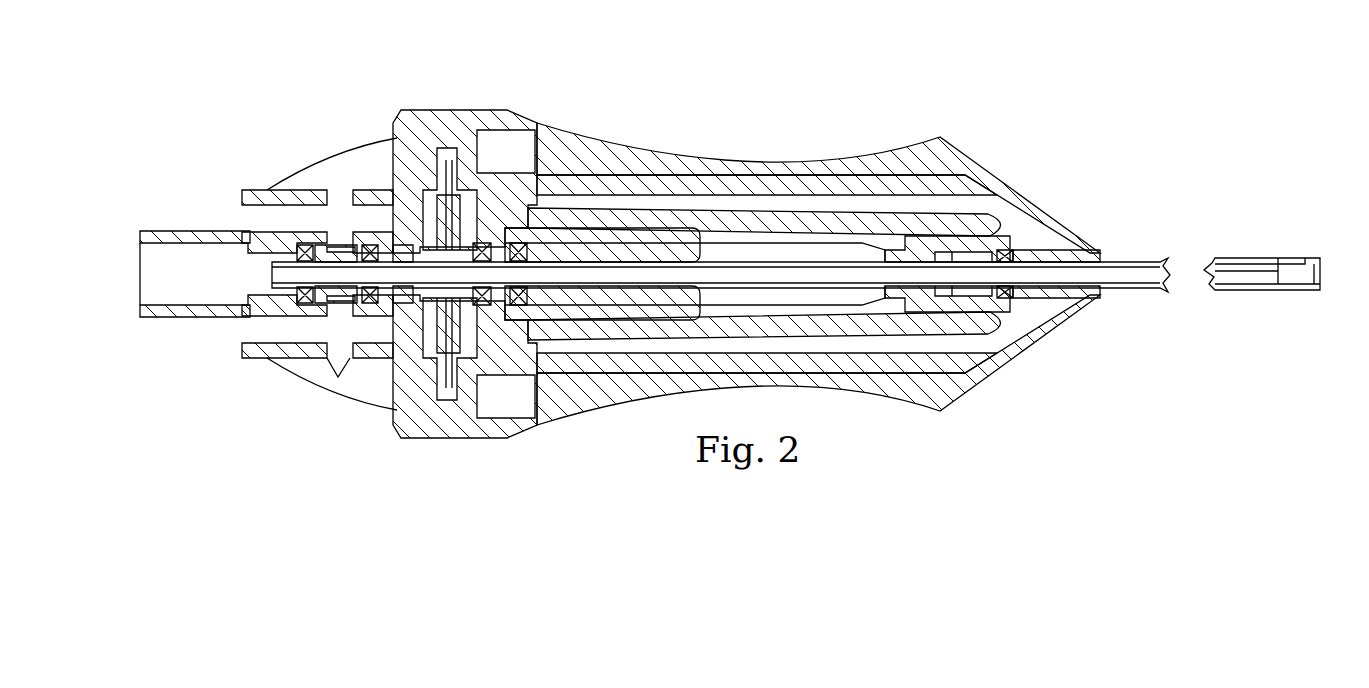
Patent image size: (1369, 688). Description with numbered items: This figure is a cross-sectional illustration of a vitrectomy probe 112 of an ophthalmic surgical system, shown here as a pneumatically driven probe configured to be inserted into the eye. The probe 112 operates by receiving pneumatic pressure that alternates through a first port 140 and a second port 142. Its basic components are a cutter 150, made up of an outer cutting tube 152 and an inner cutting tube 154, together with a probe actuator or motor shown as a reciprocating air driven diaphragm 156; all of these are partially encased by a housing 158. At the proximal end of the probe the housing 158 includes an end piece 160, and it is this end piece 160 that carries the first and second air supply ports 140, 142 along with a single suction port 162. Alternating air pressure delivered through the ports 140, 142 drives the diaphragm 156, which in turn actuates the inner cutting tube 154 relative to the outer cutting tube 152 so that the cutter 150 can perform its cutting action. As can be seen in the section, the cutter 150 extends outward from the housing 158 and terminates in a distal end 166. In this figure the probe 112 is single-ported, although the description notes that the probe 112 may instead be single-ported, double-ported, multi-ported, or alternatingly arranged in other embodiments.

The probe 112 is at (740, 265).
The first port 140 is at (252, 215).
The second port 142 is at (252, 333).
The cutter 150 is at (1272, 284).
The outer cutting tube 152 is at (1112, 290).
The inner cutting tube 154 is at (957, 287).
The reciprocating air driven diaphragm 156 is at (463, 297).
The housing 158 is at (648, 148).
The end piece 160 is at (306, 150).
The suction port 162 is at (150, 282).
The distal end 166 is at (1302, 236).